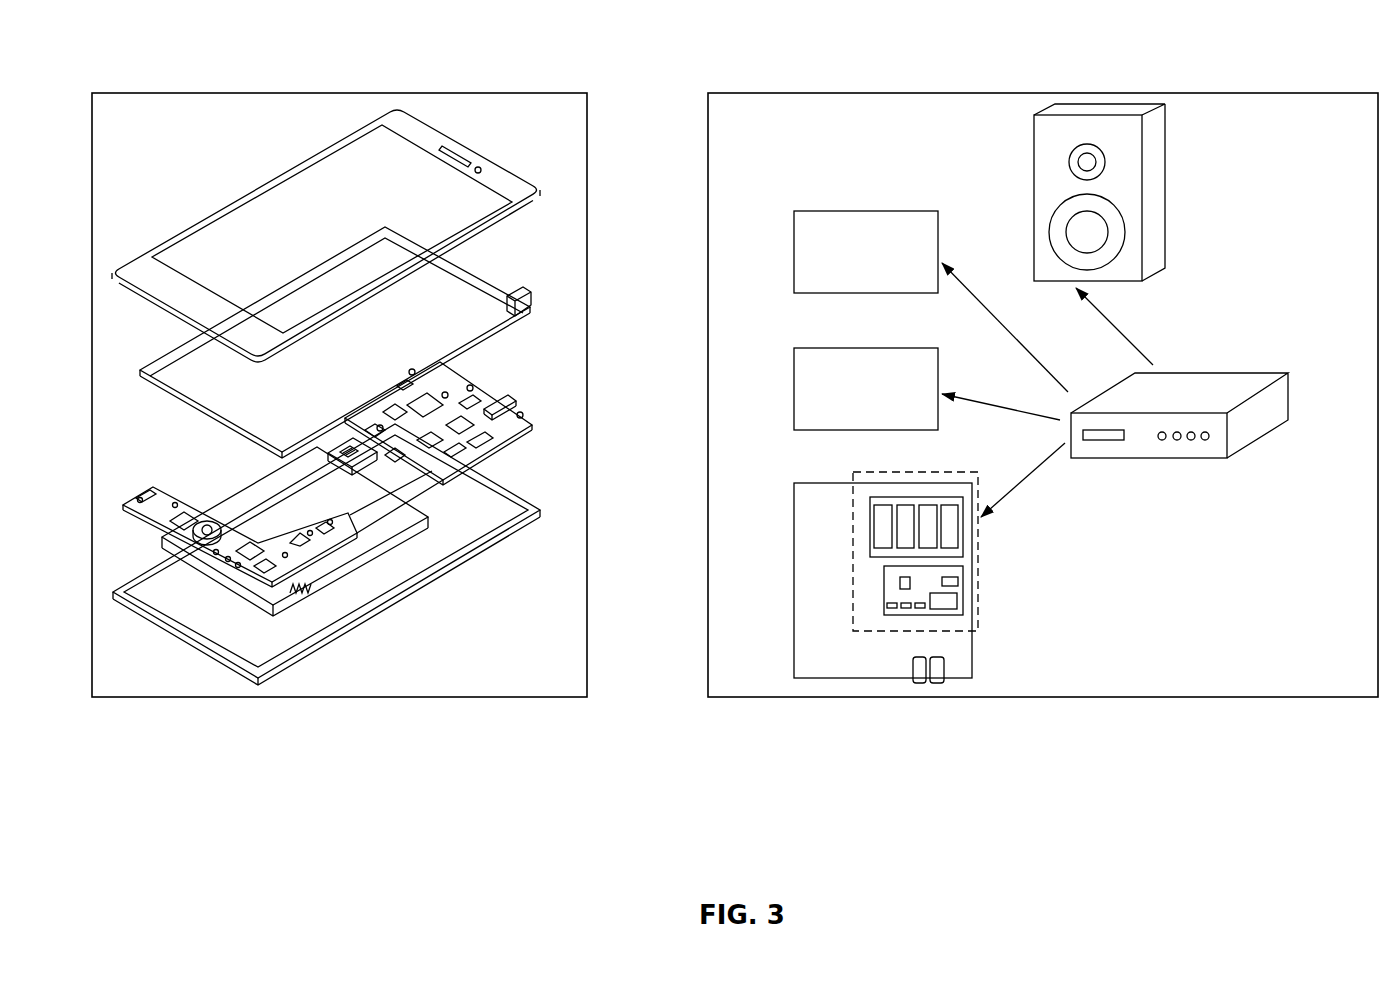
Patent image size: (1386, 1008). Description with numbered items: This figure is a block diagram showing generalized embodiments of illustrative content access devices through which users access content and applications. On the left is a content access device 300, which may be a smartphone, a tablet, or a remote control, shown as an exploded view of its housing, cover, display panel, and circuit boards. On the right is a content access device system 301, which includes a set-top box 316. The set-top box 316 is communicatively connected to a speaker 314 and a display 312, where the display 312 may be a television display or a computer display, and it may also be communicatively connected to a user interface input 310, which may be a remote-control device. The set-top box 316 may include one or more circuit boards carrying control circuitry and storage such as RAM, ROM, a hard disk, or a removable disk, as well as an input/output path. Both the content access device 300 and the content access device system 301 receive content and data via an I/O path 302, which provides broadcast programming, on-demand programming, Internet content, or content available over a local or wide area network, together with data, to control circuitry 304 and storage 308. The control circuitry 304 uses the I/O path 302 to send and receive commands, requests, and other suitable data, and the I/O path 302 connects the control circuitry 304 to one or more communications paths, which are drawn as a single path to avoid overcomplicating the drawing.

The content access device 300 is at (186, 41).
The content access device system 301 is at (1234, 54).
The I/O path 302 is at (192, 545).
The control circuitry 304 is at (852, 598).
The storage 308 is at (868, 524).
The user interface input 310 is at (792, 252).
The display 312 is at (794, 357).
The speaker 314 is at (1031, 197).
The set-top box 316 is at (1172, 371).